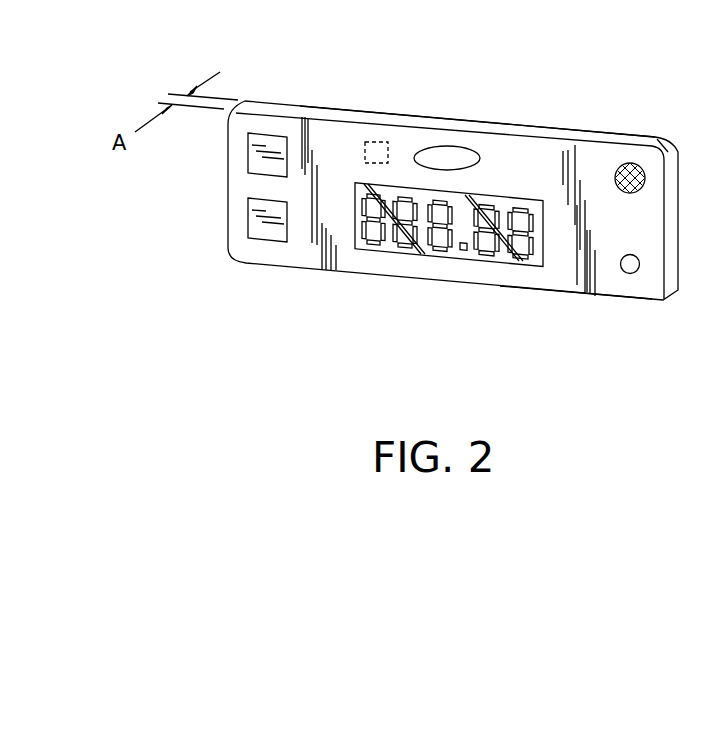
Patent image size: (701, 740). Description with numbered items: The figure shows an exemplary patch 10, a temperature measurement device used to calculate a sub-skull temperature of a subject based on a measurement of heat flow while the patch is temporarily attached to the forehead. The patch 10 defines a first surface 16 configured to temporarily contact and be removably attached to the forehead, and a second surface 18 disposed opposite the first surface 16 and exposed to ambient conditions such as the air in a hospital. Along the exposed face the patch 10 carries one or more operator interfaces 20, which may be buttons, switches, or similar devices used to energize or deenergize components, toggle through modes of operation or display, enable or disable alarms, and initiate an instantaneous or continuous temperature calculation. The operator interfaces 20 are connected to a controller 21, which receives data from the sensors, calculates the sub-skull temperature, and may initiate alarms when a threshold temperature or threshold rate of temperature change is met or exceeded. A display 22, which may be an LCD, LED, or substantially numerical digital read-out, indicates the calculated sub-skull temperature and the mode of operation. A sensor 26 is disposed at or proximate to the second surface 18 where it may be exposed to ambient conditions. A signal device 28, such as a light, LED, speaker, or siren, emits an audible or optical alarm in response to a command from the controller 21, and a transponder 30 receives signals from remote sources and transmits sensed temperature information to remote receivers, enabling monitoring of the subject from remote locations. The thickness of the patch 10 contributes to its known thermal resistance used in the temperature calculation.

The patch 10 is at (292, 268).
The first surface 16 is at (520, 127).
The second surface 18 is at (555, 272).
The operator interface 20 is at (250, 158).
The controller 21 is at (372, 141).
The display 22 is at (420, 254).
The sensor 26 is at (432, 147).
The signal device 28 is at (633, 163).
The transponder 30 is at (630, 274).